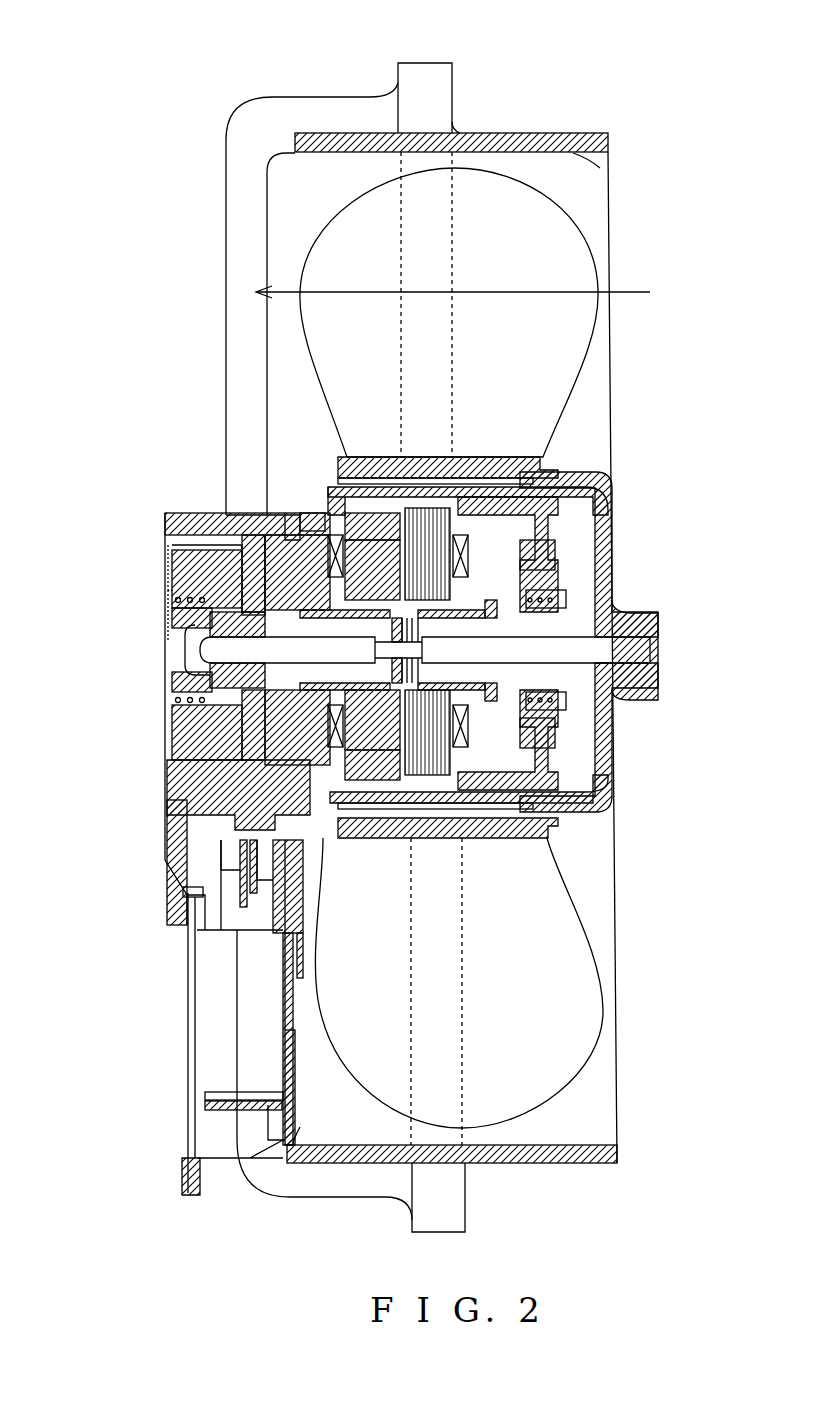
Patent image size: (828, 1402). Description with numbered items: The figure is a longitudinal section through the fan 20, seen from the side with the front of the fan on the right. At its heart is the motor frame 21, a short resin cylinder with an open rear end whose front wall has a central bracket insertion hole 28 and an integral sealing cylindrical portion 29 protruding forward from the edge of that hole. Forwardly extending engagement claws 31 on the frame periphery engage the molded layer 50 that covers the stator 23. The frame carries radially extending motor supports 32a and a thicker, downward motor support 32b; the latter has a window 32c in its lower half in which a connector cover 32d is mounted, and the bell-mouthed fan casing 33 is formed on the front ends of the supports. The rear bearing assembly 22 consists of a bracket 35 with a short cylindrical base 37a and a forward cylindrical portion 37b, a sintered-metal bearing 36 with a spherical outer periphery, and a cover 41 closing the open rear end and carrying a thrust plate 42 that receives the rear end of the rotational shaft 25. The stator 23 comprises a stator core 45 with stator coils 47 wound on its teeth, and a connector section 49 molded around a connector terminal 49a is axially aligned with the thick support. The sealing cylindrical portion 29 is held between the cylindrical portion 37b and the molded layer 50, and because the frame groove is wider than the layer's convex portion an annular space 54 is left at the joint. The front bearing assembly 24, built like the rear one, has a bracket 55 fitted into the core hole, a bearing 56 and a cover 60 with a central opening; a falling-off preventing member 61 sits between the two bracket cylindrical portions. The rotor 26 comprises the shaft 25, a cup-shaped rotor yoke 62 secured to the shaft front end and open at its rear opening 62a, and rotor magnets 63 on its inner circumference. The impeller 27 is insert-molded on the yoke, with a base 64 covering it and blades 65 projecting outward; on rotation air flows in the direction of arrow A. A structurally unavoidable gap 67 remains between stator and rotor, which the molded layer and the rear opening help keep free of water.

The fan 20 is at (540, 95).
The motor frame 21 is at (213, 520).
The rear bearing assembly 22 is at (162, 556).
The stator 23 is at (590, 490).
The front bearing assembly 24 is at (572, 540).
The rotational shaft 25 is at (640, 645).
The rotor 26 is at (630, 602).
The impeller 27 is at (578, 384).
The bracket insertion hole 28 is at (205, 610).
The sealing cylindrical portion 29 is at (345, 600).
The engagement claws 31 is at (302, 510).
The motor supports 32a is at (226, 205).
The motor support 32b is at (175, 905).
The window 32c is at (250, 990).
The connector cover 32d is at (192, 1090).
The fan casing 33 is at (608, 170).
The bracket 35 is at (165, 530).
The bearing 36 is at (195, 690).
The base 37a is at (220, 520).
The cylindrical portion 37b is at (400, 618).
The cover 41 is at (185, 722).
The thrust plate 42 is at (200, 650).
The stator core 45 is at (420, 790).
The stator coils 47 is at (460, 800).
The connector section 49 is at (355, 860).
The connector terminal 49a is at (182, 875).
The molded layer 50 is at (283, 510).
The annular space 54 is at (335, 548).
The bracket 55 is at (582, 800).
The bearing 56 is at (620, 685).
The cover 60 is at (578, 742).
The falling-off preventing member 61 is at (400, 683).
The rotor yoke 62 is at (593, 830).
The opening 62a is at (340, 860).
The rotor magnets 63 is at (375, 810).
The base 64 is at (500, 465).
The blades 65 is at (575, 330).
The gap 67 is at (378, 505).
The arrow A is at (590, 290).